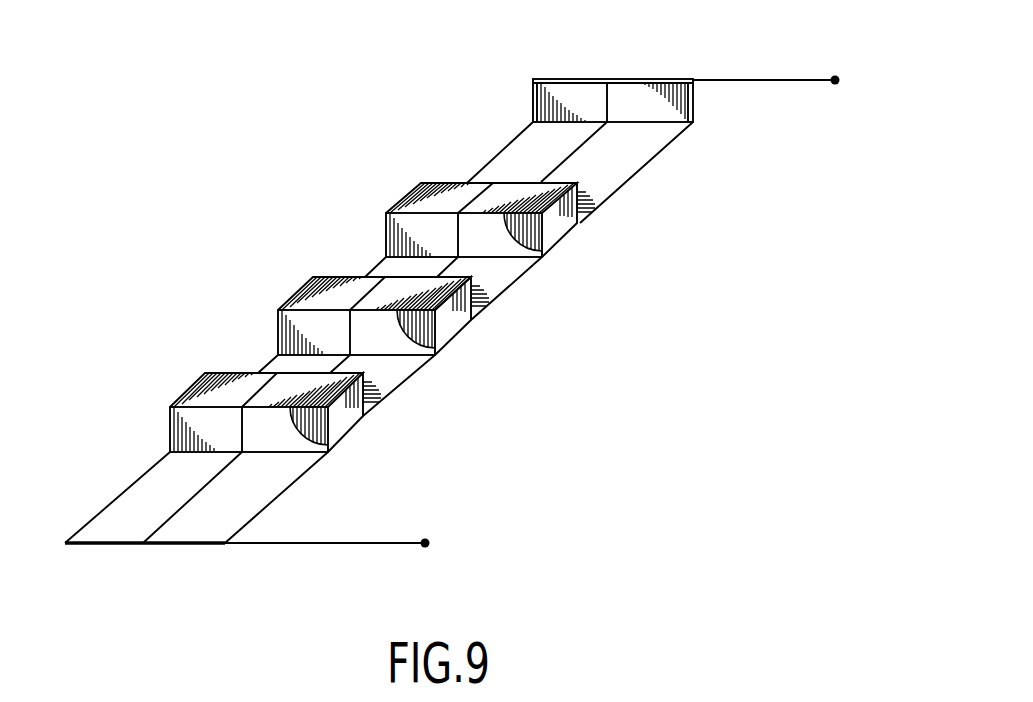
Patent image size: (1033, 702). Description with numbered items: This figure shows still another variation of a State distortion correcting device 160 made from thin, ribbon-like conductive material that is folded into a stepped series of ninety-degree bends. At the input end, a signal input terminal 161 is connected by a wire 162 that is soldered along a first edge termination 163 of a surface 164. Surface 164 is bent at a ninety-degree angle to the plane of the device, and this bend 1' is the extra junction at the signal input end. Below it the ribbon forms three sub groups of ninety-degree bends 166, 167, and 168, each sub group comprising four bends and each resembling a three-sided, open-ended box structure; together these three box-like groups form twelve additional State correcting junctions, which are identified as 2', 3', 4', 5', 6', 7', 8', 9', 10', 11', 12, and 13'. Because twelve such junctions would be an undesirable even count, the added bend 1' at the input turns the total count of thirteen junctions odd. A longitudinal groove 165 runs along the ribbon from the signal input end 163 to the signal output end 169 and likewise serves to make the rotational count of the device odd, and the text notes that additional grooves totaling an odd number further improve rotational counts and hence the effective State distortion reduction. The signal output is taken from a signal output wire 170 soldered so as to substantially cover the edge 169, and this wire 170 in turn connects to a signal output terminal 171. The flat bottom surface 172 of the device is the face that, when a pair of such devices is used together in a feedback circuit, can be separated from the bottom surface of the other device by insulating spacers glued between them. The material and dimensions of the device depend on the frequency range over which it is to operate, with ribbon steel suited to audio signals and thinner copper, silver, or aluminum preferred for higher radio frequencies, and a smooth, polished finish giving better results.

The State distortion correcting device 160 is at (410, 322).
The signal input terminal 161 is at (843, 98).
The wire 162 is at (781, 73).
The first edge termination 163 is at (606, 63).
The surface 164 is at (548, 98).
The longitudinal groove 165 is at (468, 183).
The first sub group of 90 degree bends 166 is at (432, 206).
The second sub group of 90 degree bends 167 is at (339, 317).
The third sub group of 90 degree bends 168 is at (217, 424).
The edge 169 is at (178, 552).
The signal output wire 170 is at (319, 552).
The signal output terminal 171 is at (441, 538).
The bottom surface 172 is at (525, 292).
The 90 degree bend 1' is at (706, 103).
The 90 degree State correcting junction 2' is at (580, 192).
The 90 degree State correcting junction 3' is at (450, 174).
The 90 degree State correcting junction 4' is at (548, 258).
The 90 degree State correcting junction 5' is at (366, 235).
The 90 degree State correcting junction 6' is at (476, 326).
The 90 degree State correcting junction 7' is at (342, 271).
The 90 degree State correcting junction 8' is at (442, 355).
The 90 degree State correcting junction 9' is at (257, 332).
The 90 degree State correcting junction 10' is at (357, 395).
The 90 degree State correcting junction 11' is at (229, 368).
The 90 degree State correcting junction 12 is at (190, 408).
The 90 degree State correcting junction 13' is at (334, 463).